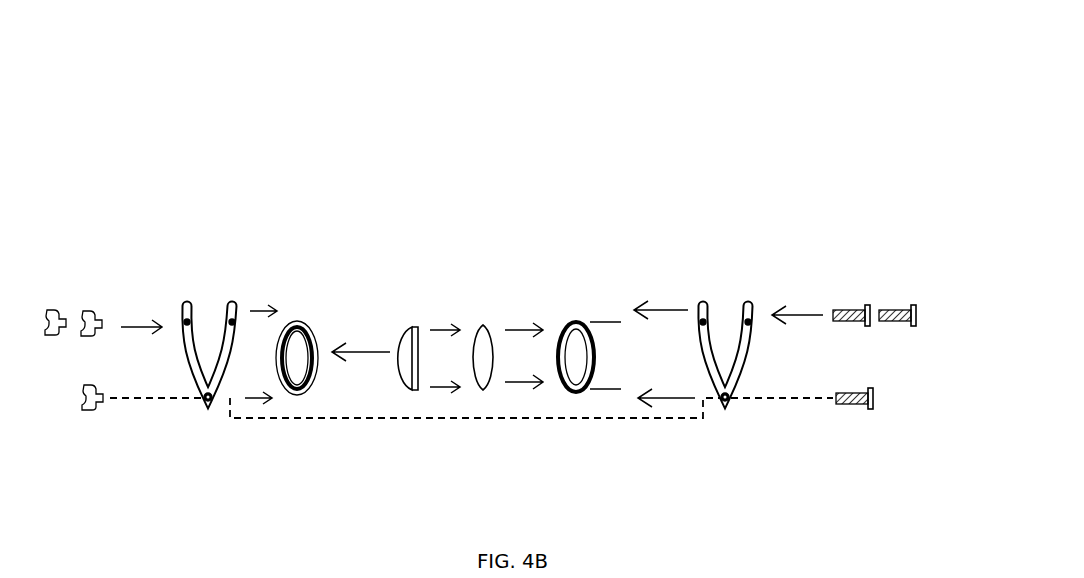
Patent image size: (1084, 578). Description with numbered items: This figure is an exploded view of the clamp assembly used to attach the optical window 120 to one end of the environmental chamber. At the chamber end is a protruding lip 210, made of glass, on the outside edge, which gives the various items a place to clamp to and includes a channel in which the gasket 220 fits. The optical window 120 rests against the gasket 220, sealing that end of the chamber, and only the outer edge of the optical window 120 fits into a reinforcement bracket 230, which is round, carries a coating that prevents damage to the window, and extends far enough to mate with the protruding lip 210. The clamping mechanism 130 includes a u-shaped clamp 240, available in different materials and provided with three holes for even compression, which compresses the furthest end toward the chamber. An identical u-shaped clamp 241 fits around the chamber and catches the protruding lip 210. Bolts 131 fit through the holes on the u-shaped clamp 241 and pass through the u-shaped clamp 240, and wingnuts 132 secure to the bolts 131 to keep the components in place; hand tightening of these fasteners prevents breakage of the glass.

The optical window 120 is at (407, 330).
The clamping mechanism 130 is at (740, 433).
The bolts 131 is at (870, 326).
The wingnuts 132 is at (53, 338).
The protruding lip 210 is at (596, 325).
The gasket 220 is at (482, 327).
The reinforcement bracket 230 is at (296, 320).
The u-shaped clamp 240 is at (231, 305).
The u-shaped clamp 241 is at (756, 310).